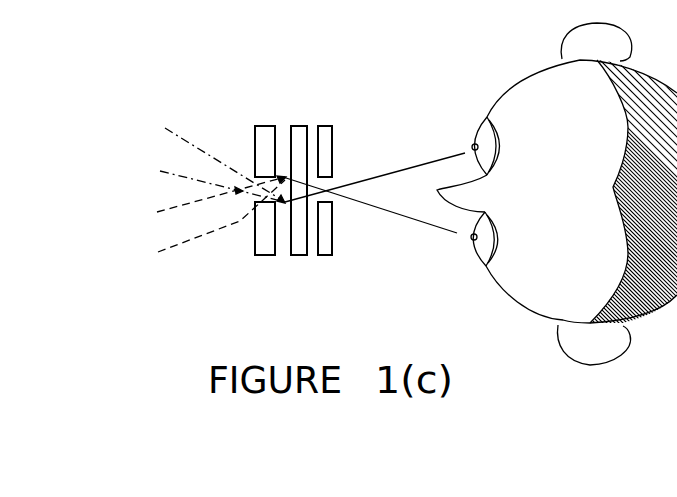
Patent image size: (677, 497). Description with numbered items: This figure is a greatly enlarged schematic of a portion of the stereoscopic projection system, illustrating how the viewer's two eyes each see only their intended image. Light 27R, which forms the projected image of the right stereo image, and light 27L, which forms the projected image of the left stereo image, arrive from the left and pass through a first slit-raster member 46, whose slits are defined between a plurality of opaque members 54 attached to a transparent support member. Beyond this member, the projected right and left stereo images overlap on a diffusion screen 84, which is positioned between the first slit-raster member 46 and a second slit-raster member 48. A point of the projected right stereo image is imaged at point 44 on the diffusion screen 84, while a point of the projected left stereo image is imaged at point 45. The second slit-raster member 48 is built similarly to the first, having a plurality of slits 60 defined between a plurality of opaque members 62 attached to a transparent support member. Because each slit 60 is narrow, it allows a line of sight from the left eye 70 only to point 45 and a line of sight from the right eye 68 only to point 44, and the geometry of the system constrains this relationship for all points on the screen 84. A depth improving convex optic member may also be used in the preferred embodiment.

The light forming projected image of right stereo image 27R is at (195, 143).
The light forming projected image of left stereo image 27L is at (198, 232).
The point on diffusion screen 44 is at (248, 190).
The first slit-raster member 46 is at (253, 145).
The second slit-raster member 48 is at (333, 219).
The opaque members 54 is at (278, 124).
The diffusion screen 84 is at (299, 126).
The point on diffusion screen 45 is at (298, 167).
The opaque members 62 is at (332, 147).
The slits 60 is at (332, 193).
The left eye 70 is at (462, 148).
The right eye 68 is at (458, 242).